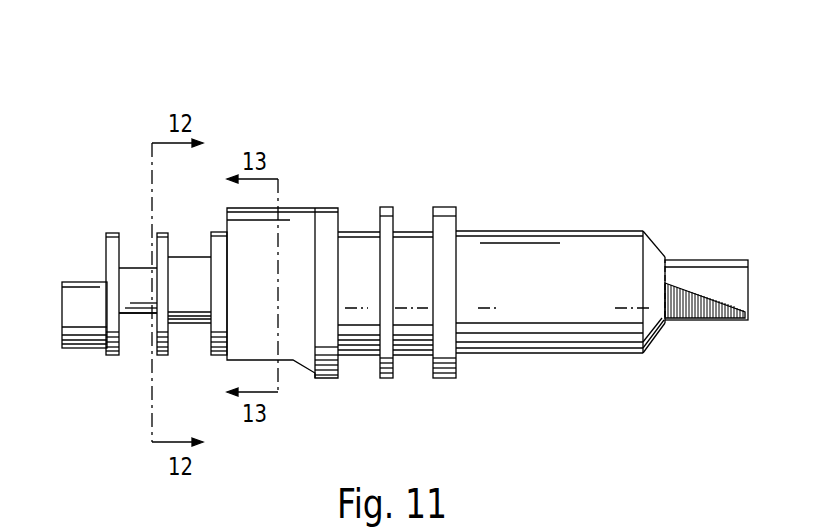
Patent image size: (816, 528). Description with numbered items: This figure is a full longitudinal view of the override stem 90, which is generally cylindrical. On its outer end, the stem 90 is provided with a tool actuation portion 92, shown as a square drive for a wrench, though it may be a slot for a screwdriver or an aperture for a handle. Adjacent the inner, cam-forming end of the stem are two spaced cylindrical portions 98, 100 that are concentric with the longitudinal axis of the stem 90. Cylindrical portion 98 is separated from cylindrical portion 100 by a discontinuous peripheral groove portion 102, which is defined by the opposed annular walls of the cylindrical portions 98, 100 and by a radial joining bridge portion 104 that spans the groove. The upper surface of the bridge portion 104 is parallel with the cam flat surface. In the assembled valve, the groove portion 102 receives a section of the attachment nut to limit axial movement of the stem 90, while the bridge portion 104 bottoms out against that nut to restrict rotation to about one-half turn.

The override stem 90 is at (482, 90).
The tool actuation portion 92 is at (707, 285).
The cylindrical portion 98 is at (110, 232).
The cylindrical portion 100 is at (161, 232).
The discontinuous peripheral groove portion 102 is at (135, 314).
The radial joining bridge portion 104 is at (133, 277).